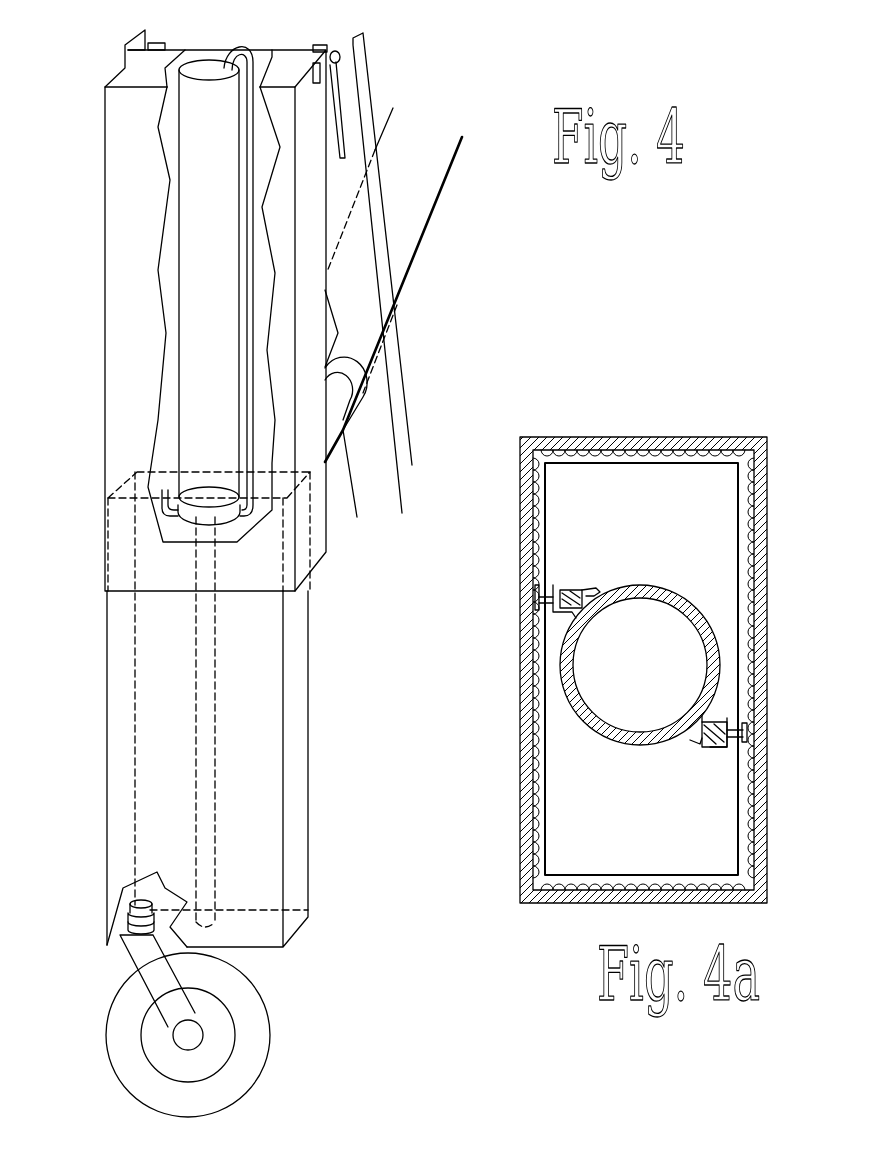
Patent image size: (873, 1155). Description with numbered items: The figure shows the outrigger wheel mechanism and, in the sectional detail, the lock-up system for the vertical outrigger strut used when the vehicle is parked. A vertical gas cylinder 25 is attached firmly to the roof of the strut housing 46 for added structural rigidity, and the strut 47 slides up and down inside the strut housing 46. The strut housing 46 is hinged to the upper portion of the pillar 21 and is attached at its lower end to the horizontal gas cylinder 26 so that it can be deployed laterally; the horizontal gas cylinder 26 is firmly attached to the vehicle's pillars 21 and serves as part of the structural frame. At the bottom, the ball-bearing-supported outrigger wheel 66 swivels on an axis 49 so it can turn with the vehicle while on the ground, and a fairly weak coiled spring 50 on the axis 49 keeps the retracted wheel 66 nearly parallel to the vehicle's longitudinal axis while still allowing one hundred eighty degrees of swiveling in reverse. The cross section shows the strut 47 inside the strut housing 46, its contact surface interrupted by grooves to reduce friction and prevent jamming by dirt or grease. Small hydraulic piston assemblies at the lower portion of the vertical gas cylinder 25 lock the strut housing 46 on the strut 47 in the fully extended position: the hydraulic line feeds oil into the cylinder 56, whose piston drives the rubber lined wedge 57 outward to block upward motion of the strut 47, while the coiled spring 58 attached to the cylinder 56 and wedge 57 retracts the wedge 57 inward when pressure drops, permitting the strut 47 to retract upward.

In FIG. 4, the pillar 21 is at (362, 90).
In FIG. 4, the vertical gas cylinder 25 is at (202, 263).
In FIG. 4A, the vertical gas cylinder 25 is at (640, 587).
In FIG. 4, the horizontal gas cylinder 26 is at (402, 197).
In FIG. 4, the strut housing 46 is at (138, 127).
In FIG. 4A, the strut housing 46 is at (528, 795).
In FIG. 4, the strut 47 is at (122, 705).
In FIG. 4A, the strut 47 is at (538, 763).
In FIG. 4, the axis 49 is at (117, 932).
In FIG. 4, the coiled spring 50 is at (125, 902).
In FIG. 4A, the cylinder 56 is at (695, 772).
In FIG. 4A, the rubber lined wedge 57 is at (747, 735).
In FIG. 4A, the coiled spring 58 is at (572, 593).
In FIG. 4, the outrigger wheel 66 is at (253, 1023).